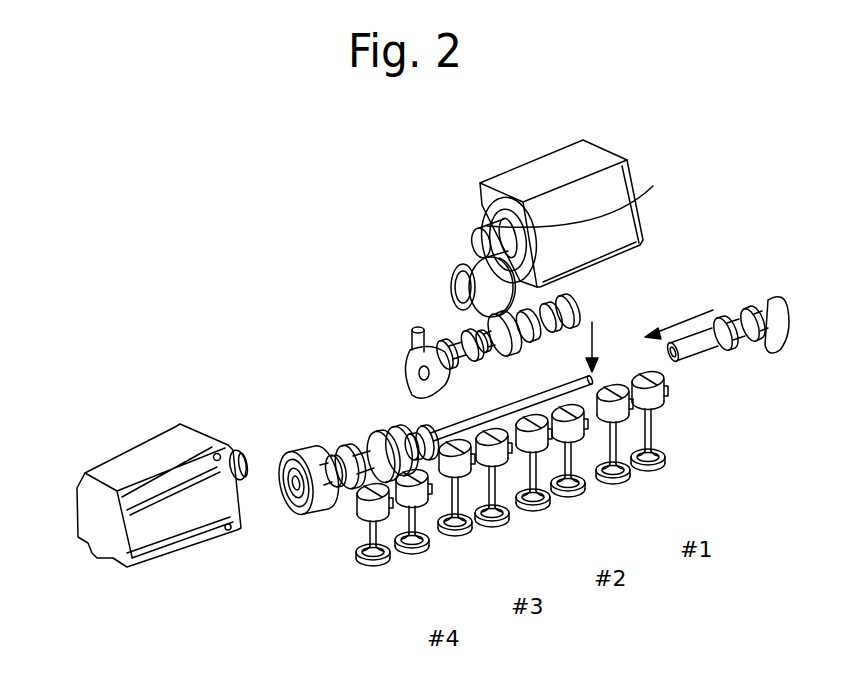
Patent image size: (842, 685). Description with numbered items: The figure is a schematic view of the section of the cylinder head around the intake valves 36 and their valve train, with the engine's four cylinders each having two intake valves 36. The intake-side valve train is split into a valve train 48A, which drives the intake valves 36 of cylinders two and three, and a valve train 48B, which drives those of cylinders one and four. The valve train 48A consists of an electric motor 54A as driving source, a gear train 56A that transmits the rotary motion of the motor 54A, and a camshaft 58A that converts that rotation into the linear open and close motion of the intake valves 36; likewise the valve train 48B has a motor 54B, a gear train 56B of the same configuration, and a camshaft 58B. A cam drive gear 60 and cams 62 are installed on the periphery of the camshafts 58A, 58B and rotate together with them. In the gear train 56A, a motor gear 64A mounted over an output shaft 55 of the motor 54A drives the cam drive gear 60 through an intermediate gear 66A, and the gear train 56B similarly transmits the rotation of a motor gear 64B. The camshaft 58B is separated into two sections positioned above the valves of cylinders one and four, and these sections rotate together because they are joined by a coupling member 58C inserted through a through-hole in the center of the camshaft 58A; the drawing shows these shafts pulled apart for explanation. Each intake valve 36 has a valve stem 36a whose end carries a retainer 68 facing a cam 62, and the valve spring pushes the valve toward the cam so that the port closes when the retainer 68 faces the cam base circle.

The intake valve 36 is at (390, 562).
The valve stem 36a is at (370, 540).
The valve train 48A is at (613, 145).
The valve train 48B is at (70, 477).
The electric motor 54A is at (522, 163).
The electric motor 54B is at (127, 450).
The output shaft 55 is at (585, 195).
The gear train 56A is at (443, 222).
The gear train 56B is at (262, 507).
The camshaft 58A is at (422, 332).
The camshaft 58B is at (380, 433).
The coupling member 58C is at (413, 372).
The cam drive gear 60 is at (300, 518).
The cam 62 is at (463, 290).
The motor gear 64A is at (492, 228).
The motor gear 64B is at (227, 450).
The intermediate gear 66A is at (473, 255).
The retainer 68 is at (365, 512).